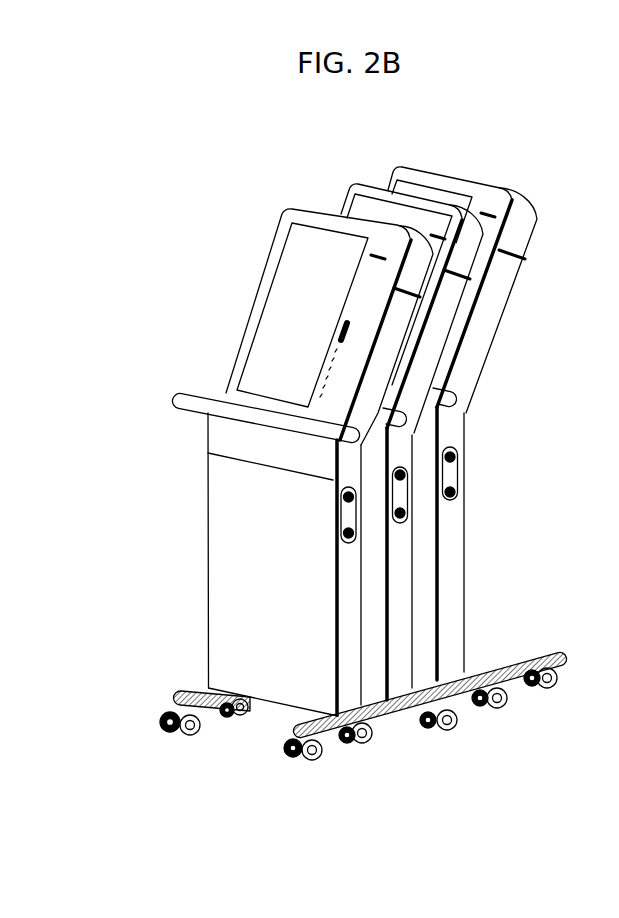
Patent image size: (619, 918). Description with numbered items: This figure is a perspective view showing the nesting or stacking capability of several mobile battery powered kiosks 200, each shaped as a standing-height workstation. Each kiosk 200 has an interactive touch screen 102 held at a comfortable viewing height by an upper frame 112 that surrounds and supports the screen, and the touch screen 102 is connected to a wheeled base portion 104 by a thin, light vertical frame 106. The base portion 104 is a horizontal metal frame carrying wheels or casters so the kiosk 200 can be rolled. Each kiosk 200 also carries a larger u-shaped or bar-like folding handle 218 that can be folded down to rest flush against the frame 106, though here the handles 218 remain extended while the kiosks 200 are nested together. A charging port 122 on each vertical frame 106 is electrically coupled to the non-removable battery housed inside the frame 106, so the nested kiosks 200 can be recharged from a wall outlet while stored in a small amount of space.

The mobile battery powered kiosk 200 is at (162, 182).
The interactive touch screen 102 is at (406, 191).
The upper frame 112 is at (383, 360).
The folding handle 218 is at (180, 397).
The charging port 122 is at (348, 515).
The vertical frame 106 is at (350, 602).
The base portion 104 is at (383, 718).